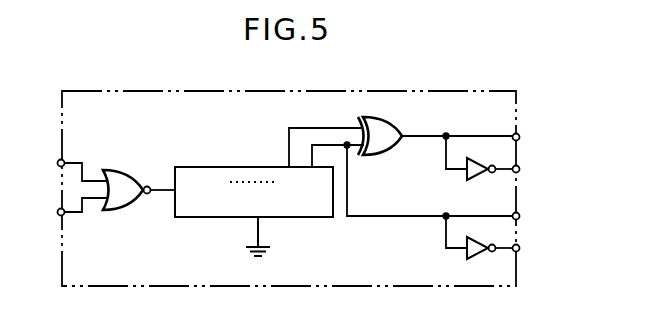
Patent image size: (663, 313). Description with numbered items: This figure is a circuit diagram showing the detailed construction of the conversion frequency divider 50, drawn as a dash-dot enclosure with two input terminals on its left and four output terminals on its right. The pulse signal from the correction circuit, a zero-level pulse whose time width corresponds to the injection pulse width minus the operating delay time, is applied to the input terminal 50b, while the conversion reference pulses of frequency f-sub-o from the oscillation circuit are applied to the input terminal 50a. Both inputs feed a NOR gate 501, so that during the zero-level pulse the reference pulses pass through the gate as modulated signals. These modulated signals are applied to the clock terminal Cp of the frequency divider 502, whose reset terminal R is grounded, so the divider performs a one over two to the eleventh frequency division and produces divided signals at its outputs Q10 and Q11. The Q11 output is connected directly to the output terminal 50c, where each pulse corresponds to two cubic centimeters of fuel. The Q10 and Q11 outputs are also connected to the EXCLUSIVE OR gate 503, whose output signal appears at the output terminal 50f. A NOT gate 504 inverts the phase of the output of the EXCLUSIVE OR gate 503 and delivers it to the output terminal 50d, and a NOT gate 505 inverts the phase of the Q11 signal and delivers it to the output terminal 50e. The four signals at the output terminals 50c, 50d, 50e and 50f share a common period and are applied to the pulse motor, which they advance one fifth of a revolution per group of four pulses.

The conversion frequency divider 50 is at (516, 92).
The input terminal 50a is at (58, 215).
The input terminal 50b is at (57, 165).
The output terminal 50c is at (520, 216).
The output terminal 50d is at (520, 169).
The output terminal 50e is at (520, 248).
The output terminal 50f is at (520, 137).
The OR gate 501 is at (134, 170).
The frequency divider 502 is at (259, 166).
The EXCLUSIVE OR gate 503 is at (406, 124).
The NOT gate 504 is at (473, 182).
The NOT gate 505 is at (474, 261).